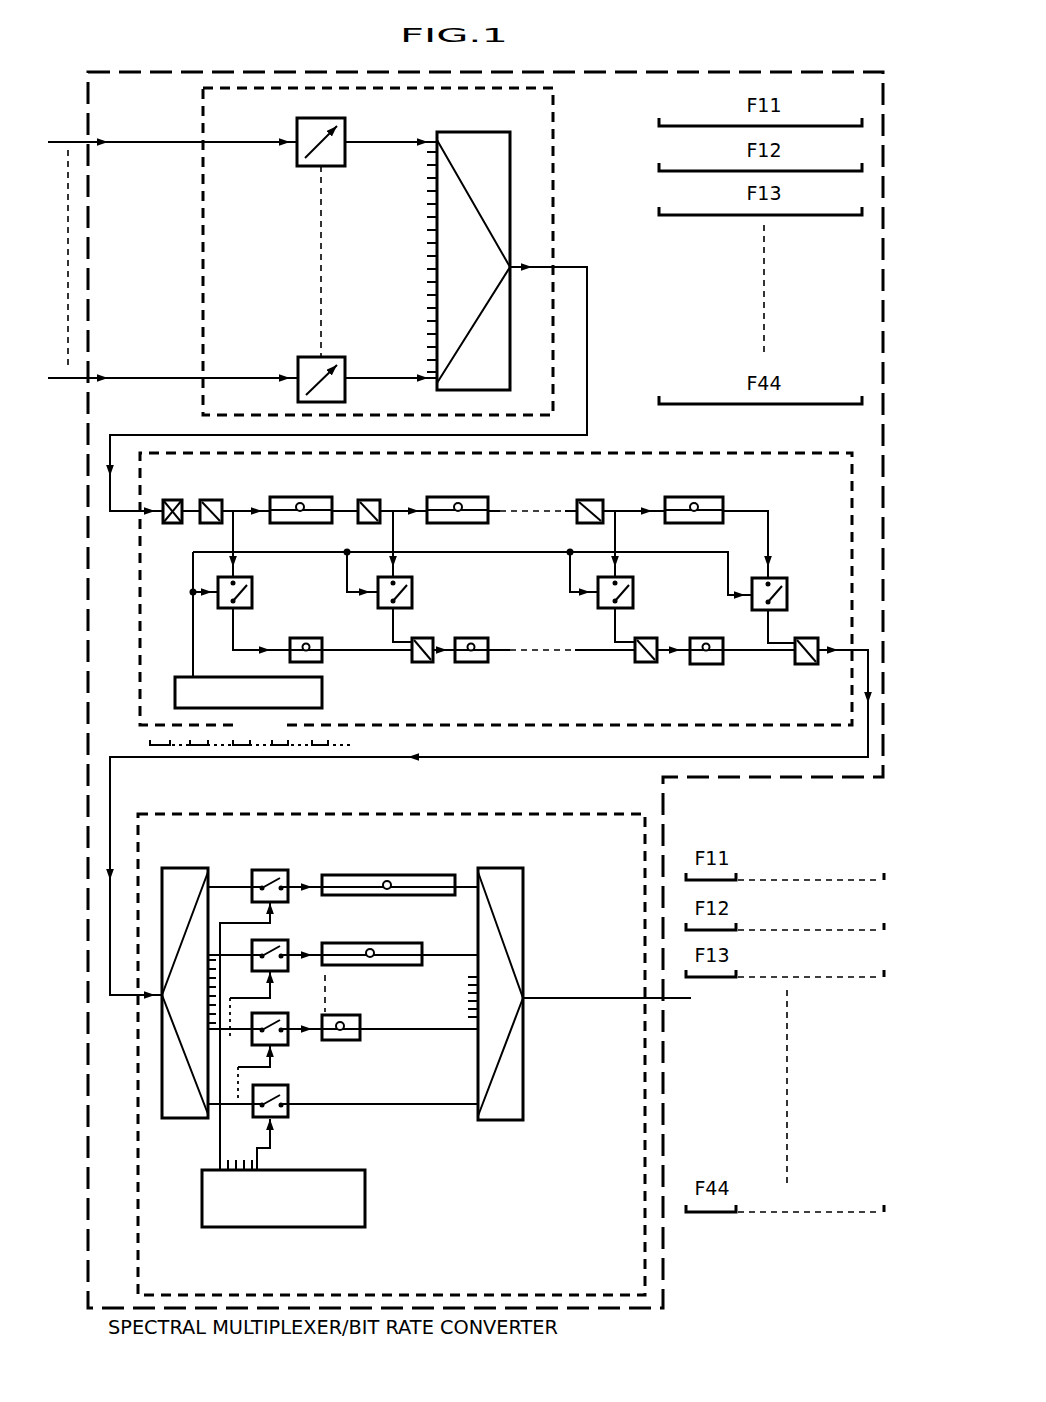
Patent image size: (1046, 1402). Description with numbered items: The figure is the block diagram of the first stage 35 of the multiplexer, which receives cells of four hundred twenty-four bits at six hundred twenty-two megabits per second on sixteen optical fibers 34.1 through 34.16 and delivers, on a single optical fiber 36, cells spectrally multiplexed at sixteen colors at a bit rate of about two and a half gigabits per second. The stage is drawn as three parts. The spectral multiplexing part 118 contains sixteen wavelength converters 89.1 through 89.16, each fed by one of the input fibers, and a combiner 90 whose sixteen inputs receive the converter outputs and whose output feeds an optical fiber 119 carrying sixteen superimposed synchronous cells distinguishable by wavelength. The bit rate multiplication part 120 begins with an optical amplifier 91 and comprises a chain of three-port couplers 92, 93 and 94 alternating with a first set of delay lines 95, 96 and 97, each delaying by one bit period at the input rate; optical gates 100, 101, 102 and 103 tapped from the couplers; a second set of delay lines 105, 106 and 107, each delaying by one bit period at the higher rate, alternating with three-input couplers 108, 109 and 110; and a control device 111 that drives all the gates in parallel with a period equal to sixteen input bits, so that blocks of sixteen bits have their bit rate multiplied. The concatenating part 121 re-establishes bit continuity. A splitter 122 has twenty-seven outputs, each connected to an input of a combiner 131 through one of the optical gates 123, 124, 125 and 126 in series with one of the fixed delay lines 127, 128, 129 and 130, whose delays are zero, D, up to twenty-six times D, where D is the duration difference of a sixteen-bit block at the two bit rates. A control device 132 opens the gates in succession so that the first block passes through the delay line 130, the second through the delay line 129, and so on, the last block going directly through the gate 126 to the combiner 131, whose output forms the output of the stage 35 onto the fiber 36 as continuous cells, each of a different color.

The first stage 35 is at (768, 72).
The optical fiber 34.1 is at (180, 142).
The optical fiber 34.16 is at (180, 378).
The wavelength converter 89.1 is at (300, 135).
The wavelength converter 89.16 is at (310, 360).
The combiner 90 is at (483, 142).
The part carrying out spectral multiplexing 118 is at (553, 235).
The optical fiber 119 is at (587, 355).
The part carrying out bit rate multiplication 120 is at (660, 453).
The optical amplifier 91 is at (170, 500).
The three-port coupler 92 is at (212, 500).
The three-port coupler 93 is at (375, 500).
The three-port coupler 94 is at (590, 500).
The delay line 95 is at (318, 497).
The delay line 96 is at (478, 497).
The delay line 97 is at (718, 497).
The optical gate 100 is at (252, 598).
The optical gate 101 is at (412, 598).
The optical gate 102 is at (633, 598).
The optical gate 103 is at (787, 598).
The delay line 105 is at (320, 662).
The delay line 106 is at (484, 662).
The delay line 107 is at (717, 665).
The three-input coupler 108 is at (427, 662).
The three-input coupler 109 is at (650, 662).
The three-input coupler 110 is at (803, 664).
The control device 111 is at (190, 677).
The part concatenating blocks 121 is at (563, 814).
The splitter 122 is at (187, 870).
The optical gate 123 is at (272, 870).
The optical gate 124 is at (272, 940).
The optical gate 125 is at (272, 1013).
The optical gate 126 is at (286, 1085).
The fixed delay line 127 is at (370, 1104).
The fixed delay line 128 is at (362, 1015).
The fixed delay line 129 is at (410, 943).
The fixed delay line 130 is at (425, 875).
The combiner 131 is at (523, 868).
The control device 132 is at (365, 1170).
The optical fiber 36 is at (689, 1000).